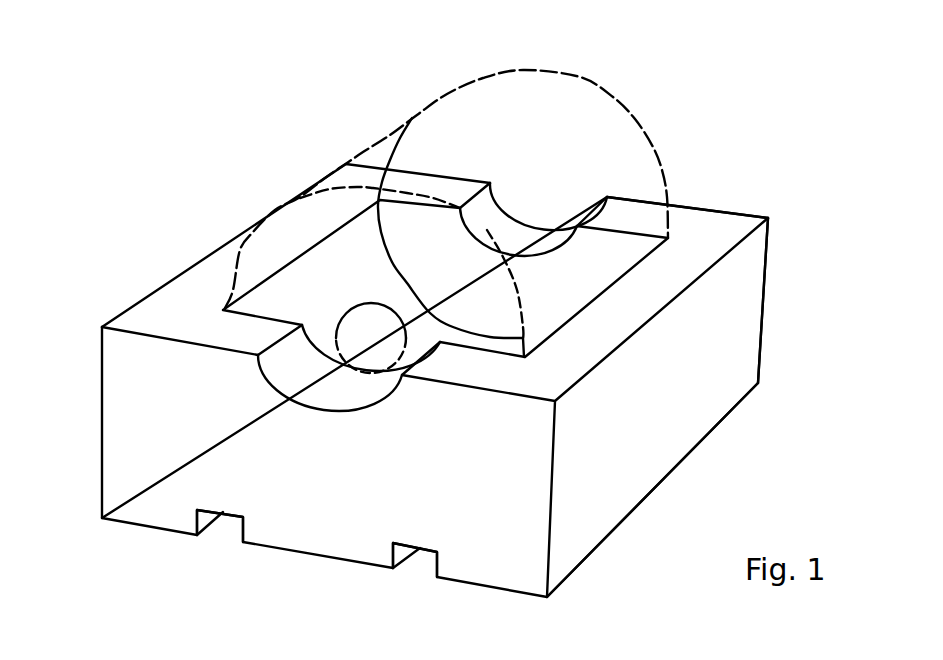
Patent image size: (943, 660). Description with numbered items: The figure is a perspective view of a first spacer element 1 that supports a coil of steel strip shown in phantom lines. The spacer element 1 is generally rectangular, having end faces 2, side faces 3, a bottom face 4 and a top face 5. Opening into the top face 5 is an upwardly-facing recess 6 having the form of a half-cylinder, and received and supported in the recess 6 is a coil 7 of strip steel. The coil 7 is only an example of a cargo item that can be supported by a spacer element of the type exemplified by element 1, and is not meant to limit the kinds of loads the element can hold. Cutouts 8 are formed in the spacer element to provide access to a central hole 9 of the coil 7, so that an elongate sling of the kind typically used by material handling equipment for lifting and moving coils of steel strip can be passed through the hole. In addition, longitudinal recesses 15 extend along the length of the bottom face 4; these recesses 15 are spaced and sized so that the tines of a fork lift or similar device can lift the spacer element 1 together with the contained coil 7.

The spacer element 1 is at (147, 297).
The end faces 2 is at (132, 432).
The side faces 3 is at (703, 408).
The bottom face 4 is at (570, 572).
The top face 5 is at (707, 227).
The recess 6 is at (337, 277).
The coil 7 is at (573, 73).
The cutouts 8 is at (495, 205).
The central hole 9 is at (352, 347).
The longitudinal recesses 15 is at (223, 527).